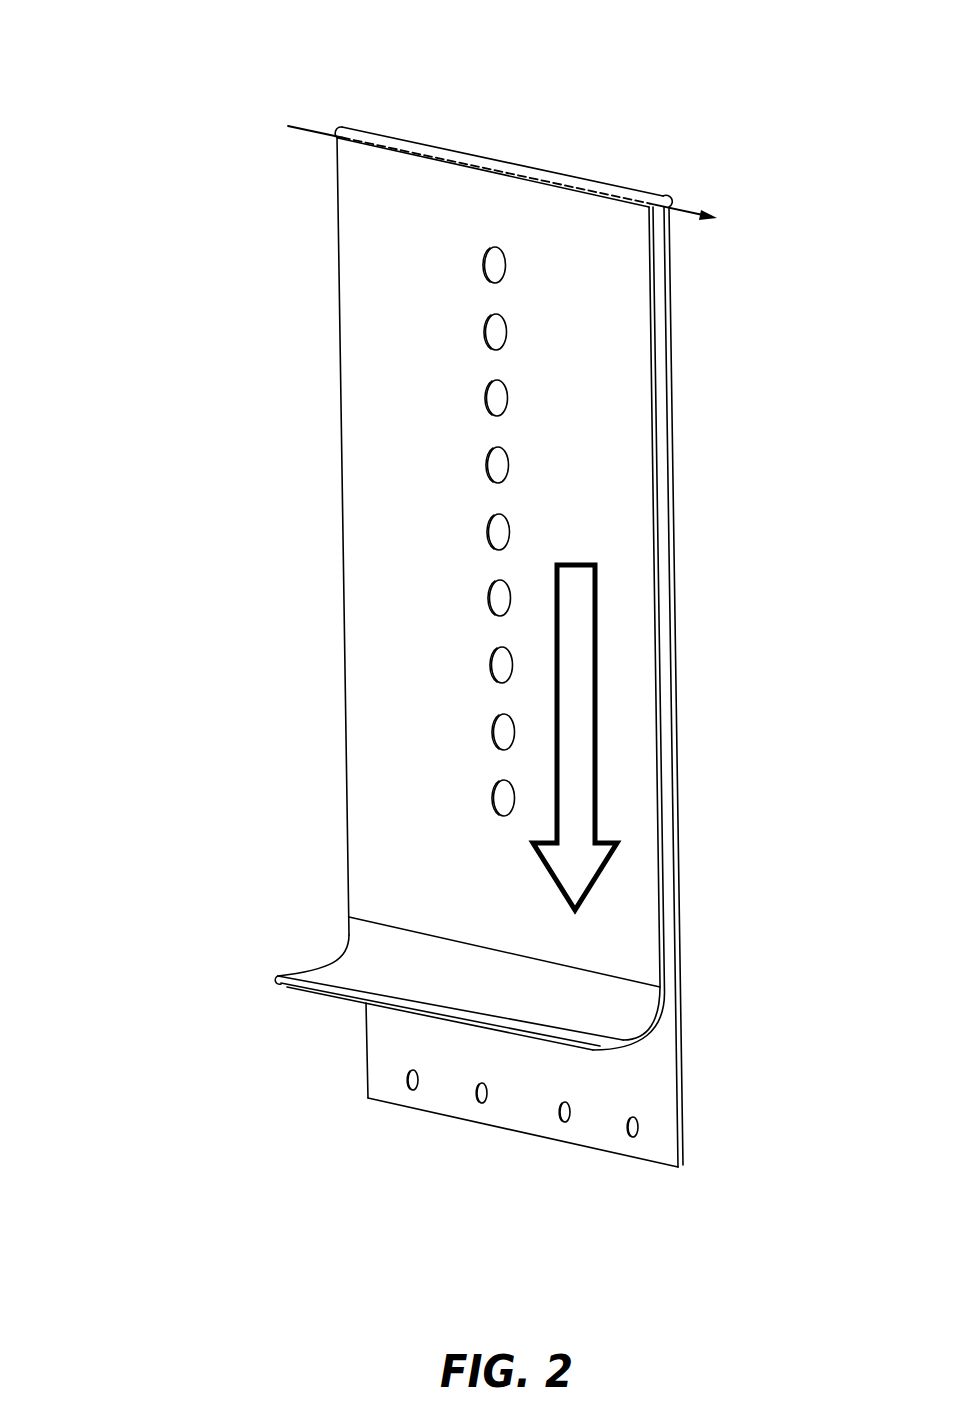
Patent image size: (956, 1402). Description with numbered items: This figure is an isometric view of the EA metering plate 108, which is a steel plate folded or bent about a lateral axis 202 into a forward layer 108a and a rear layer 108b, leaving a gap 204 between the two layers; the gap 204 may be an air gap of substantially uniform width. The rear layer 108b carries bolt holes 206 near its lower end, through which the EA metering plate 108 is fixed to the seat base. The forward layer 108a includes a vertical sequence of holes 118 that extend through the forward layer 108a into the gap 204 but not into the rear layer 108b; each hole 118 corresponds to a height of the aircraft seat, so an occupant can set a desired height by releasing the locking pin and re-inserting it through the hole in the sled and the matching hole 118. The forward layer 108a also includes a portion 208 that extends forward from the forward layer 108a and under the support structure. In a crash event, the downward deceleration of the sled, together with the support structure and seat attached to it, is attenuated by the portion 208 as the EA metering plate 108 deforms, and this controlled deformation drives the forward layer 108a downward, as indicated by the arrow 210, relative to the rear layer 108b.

The EA metering plate 108 is at (220, 58).
The forward layer 108a is at (402, 457).
The rear layer 108b is at (412, 1038).
The holes 118 is at (496, 722).
The lateral axis 202 is at (565, 197).
The gap 204 is at (664, 389).
The bolt holes 206 is at (482, 1102).
The portion 208 is at (378, 970).
The downward drive of forward layer 210 is at (577, 750).